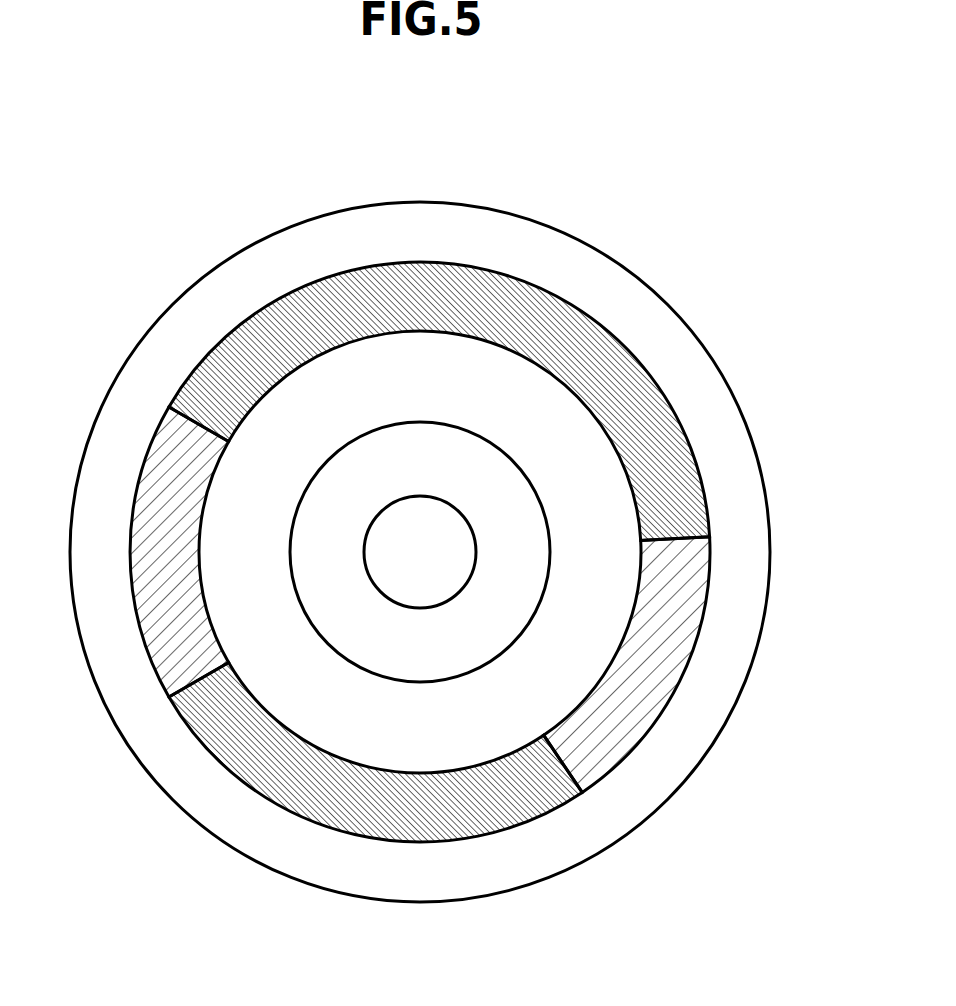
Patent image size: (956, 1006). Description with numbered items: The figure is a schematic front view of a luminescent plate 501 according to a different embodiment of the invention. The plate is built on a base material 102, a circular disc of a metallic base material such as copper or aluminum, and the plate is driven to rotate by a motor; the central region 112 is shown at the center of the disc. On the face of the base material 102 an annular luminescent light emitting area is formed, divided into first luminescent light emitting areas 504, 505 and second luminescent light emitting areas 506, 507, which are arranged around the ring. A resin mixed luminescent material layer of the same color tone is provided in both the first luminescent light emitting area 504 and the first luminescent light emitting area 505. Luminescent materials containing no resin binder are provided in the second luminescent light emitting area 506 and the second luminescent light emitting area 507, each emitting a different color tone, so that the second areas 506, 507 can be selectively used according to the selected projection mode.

The luminescent plate 501 is at (640, 181).
The base material 102 is at (648, 282).
The shaft 112 is at (422, 553).
The first luminescent light emitting area 504 is at (635, 420).
The first luminescent light emitting area 505 is at (385, 808).
The second luminescent light emitting area 506 is at (143, 590).
The second luminescent light emitting area 507 is at (655, 673).